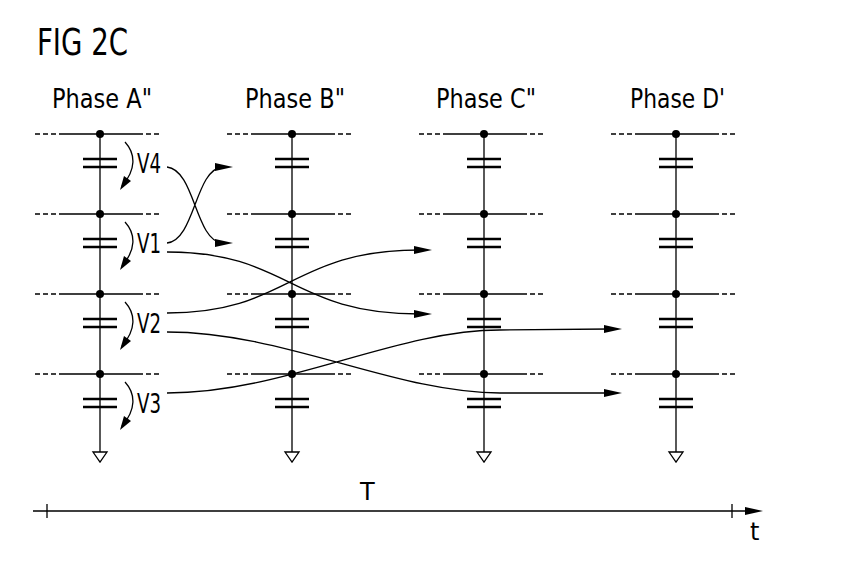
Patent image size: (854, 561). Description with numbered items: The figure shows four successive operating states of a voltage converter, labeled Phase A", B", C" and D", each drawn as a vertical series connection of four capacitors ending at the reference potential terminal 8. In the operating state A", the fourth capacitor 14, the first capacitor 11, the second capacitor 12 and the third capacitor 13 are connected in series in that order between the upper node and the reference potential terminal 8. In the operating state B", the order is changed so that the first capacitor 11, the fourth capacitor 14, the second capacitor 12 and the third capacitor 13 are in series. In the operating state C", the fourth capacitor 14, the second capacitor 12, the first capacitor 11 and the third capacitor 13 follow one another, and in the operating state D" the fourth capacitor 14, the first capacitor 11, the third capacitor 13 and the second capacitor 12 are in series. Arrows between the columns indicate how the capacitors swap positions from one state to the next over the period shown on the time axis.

The reference potential terminal 8 is at (670, 462).
The first capacitor 11 is at (92, 249).
The second capacitor 12 is at (92, 329).
The third capacitor 13 is at (92, 409).
The fourth capacitor 14 is at (92, 169).